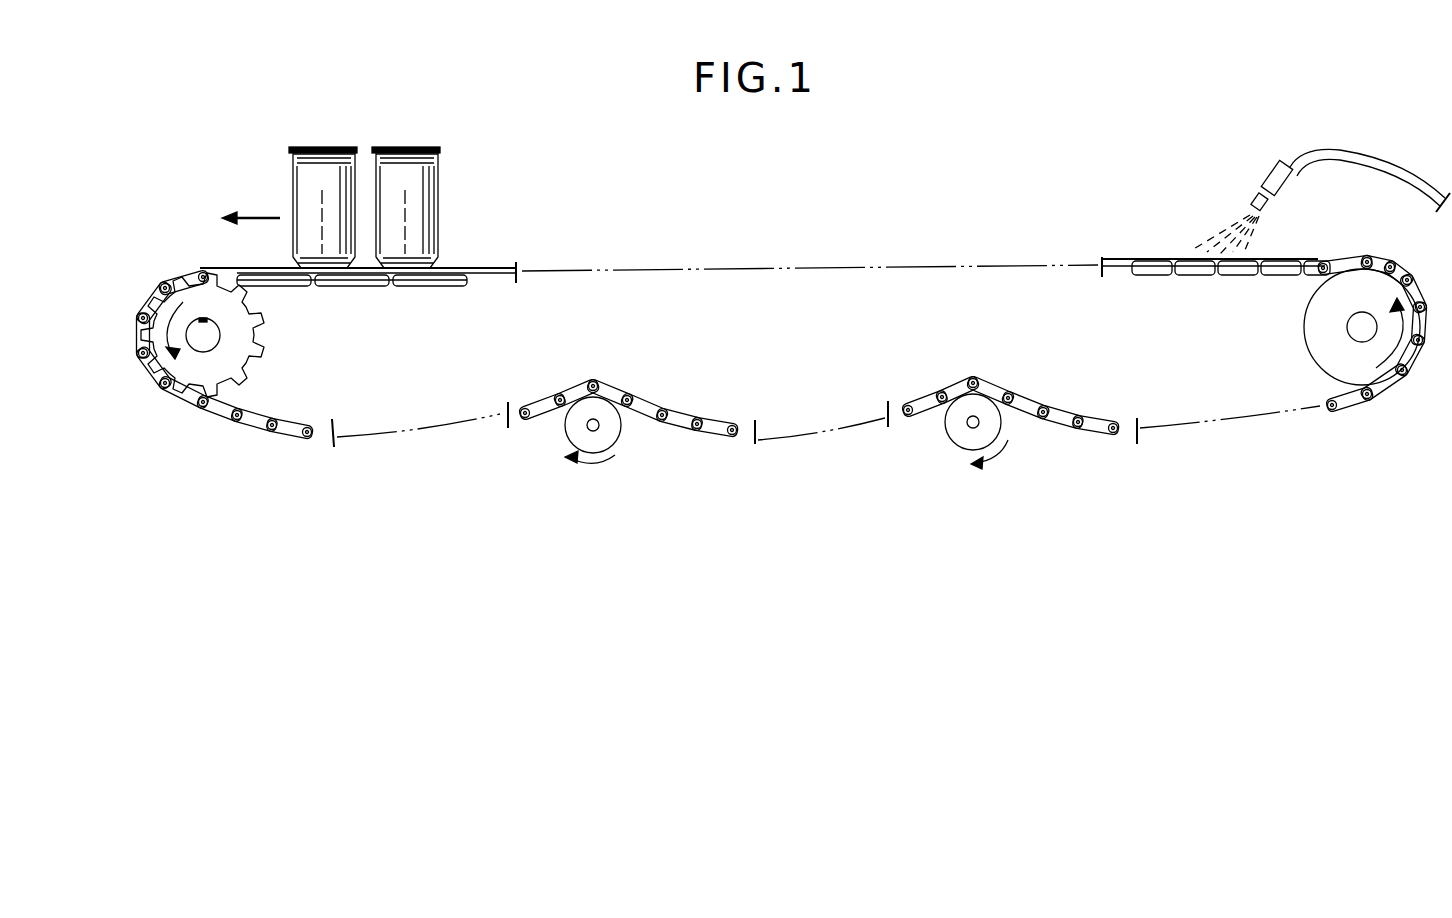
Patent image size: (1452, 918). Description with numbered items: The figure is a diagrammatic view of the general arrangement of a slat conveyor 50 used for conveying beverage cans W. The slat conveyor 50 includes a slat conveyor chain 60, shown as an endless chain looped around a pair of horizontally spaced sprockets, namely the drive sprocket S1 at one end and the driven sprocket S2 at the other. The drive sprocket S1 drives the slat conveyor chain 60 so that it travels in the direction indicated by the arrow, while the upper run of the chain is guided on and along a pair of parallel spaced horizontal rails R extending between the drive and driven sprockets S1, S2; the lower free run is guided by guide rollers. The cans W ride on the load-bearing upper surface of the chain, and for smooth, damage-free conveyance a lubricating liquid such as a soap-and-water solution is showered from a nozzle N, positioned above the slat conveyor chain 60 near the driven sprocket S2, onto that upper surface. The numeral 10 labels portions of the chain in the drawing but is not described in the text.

The conveyor chain link plates 10 is at (300, 268).
The slat conveyor 50 is at (912, 197).
The slat conveyor chain 60 is at (697, 446).
The beverage cans W is at (432, 186).
The horizontal rails R is at (500, 280).
The drive sprocket S1 is at (203, 373).
The driven sprocket S2 is at (1373, 285).
The nozzle N is at (1263, 178).